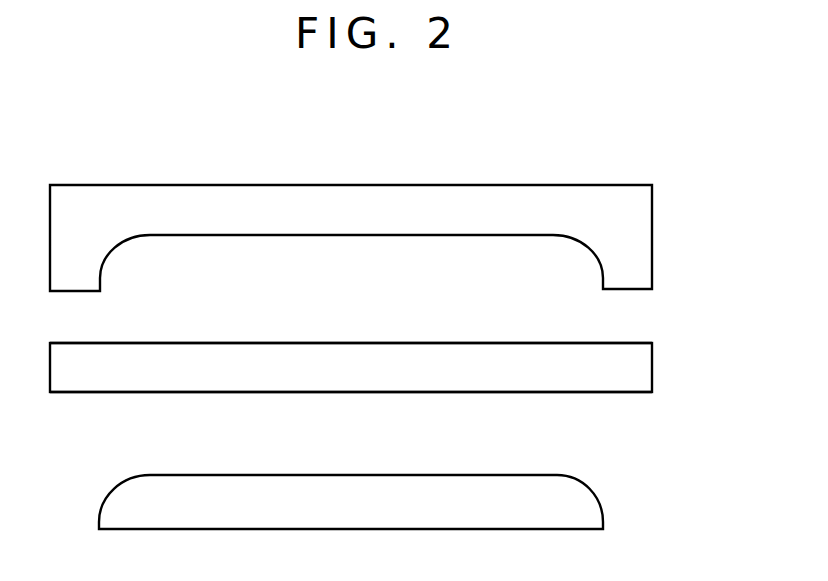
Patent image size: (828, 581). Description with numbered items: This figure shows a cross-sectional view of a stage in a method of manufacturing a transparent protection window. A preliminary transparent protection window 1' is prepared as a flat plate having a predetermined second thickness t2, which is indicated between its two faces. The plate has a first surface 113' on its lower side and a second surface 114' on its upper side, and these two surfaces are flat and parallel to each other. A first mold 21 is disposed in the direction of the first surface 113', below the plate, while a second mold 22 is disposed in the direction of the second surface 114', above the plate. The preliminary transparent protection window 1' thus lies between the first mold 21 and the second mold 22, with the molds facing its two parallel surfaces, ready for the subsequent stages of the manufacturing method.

The second mold 22 is at (640, 246).
The first mold 21 is at (583, 511).
The preliminary transparent protection window 1' is at (406, 360).
The second surface 114' is at (351, 327).
The first surface 113' is at (351, 409).
The second thickness t2 is at (353, 344).